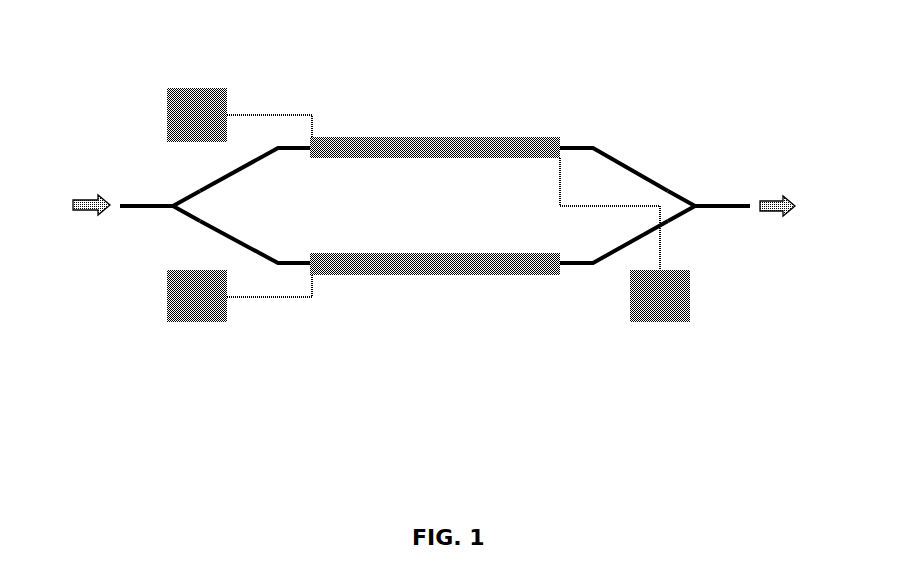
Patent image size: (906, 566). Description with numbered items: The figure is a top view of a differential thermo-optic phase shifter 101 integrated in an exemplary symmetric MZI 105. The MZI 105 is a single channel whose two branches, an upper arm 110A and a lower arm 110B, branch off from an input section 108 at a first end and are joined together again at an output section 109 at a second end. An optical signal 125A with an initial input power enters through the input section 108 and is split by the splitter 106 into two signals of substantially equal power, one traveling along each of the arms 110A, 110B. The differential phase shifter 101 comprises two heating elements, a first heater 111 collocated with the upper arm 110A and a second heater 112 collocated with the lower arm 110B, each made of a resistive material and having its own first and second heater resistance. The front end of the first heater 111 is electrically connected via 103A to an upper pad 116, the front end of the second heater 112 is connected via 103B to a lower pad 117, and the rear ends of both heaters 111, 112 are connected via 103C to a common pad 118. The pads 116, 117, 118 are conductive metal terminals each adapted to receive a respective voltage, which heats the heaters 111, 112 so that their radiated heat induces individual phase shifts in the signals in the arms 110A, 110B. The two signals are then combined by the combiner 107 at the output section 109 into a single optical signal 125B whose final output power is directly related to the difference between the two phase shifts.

The differential thermo-optic phase shifter 101 is at (630, 393).
The electrical connection to upper pad 103A is at (293, 112).
The electrical connection to lower pad 103B is at (300, 300).
The electrical connection to common pad 103C is at (660, 245).
The symmetric MZI 105 is at (695, 83).
The splitter 106 is at (200, 206).
The combiner 107 is at (695, 187).
The input section 108 is at (147, 202).
The output section 109 is at (728, 202).
The upper arm 110A is at (260, 163).
The lower arm 110B is at (260, 253).
The first heater 111 is at (497, 137).
The second heater 112 is at (470, 267).
The upper pad 116 is at (202, 93).
The lower pad 117 is at (177, 322).
The common pad 118 is at (662, 313).
The optical signal 125A is at (82, 200).
The output optical signal 125B is at (775, 197).